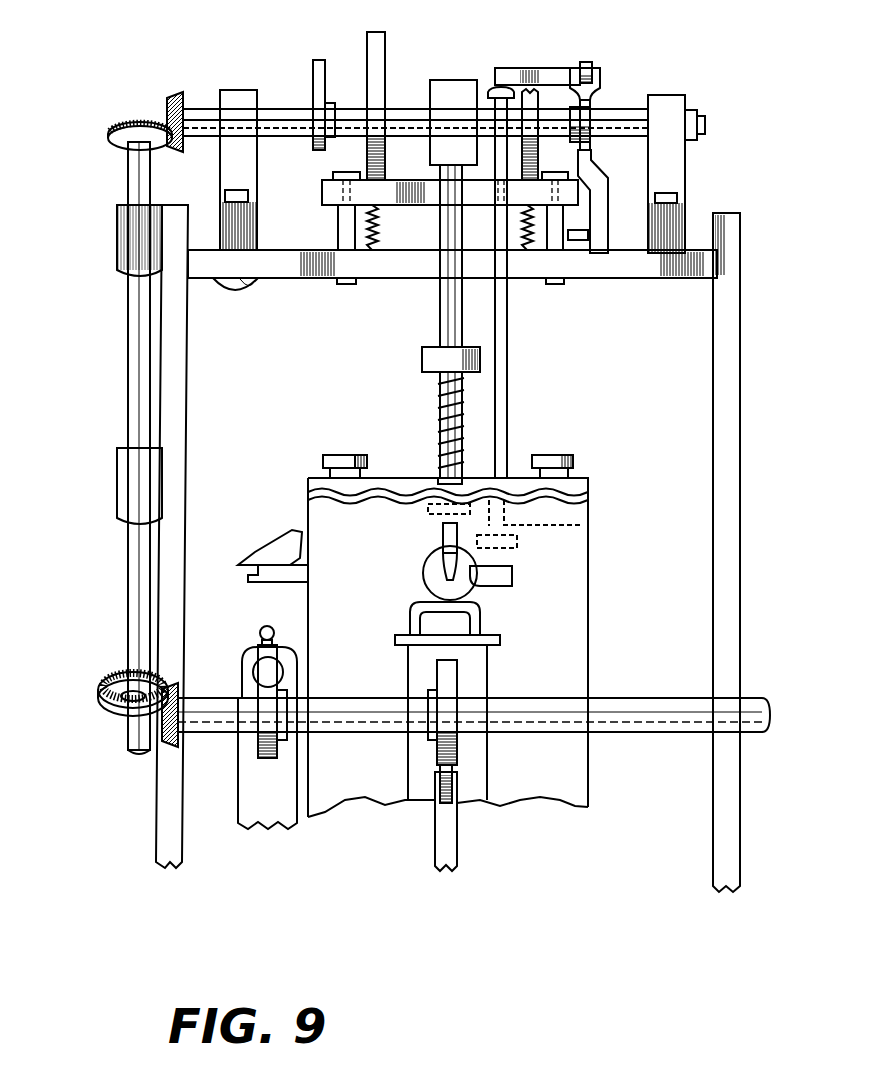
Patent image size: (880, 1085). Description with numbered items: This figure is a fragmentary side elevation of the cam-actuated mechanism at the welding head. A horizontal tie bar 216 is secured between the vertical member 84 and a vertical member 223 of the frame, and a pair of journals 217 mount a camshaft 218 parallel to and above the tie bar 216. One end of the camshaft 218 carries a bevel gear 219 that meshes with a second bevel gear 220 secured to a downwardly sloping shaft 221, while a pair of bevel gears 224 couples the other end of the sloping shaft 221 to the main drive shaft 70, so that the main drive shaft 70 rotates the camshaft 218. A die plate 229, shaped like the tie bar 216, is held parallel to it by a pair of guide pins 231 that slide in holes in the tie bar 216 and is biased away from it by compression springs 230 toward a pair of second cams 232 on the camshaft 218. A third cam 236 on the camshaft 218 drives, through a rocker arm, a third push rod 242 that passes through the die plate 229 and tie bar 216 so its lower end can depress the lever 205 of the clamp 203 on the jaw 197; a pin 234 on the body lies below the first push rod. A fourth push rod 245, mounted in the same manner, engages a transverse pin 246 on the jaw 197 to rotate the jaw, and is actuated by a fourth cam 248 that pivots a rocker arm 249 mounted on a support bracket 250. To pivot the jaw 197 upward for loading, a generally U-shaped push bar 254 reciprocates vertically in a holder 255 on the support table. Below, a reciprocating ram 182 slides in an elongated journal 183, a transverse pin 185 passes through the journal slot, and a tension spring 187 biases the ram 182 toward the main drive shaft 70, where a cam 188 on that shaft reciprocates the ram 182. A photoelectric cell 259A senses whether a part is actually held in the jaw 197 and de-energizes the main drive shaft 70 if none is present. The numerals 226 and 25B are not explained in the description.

The camshaft 218 is at (628, 108).
The journals 217 is at (240, 90).
The bevel gear 219 is at (175, 93).
The second bevel gear 220 is at (110, 125).
The downwardly sloping shaft 221 is at (128, 183).
The vertical member 223 is at (175, 395).
The horizontal tie bar 216 is at (665, 270).
The vertical member 84 is at (738, 608).
The die plate 229 is at (420, 205).
The guide pins 231 is at (340, 216).
The compression springs 230 is at (375, 240).
The third cam 236 is at (318, 60).
The second cams 232 is at (378, 35).
The block and screw shaft 226 is at (452, 80).
The rocker arm 249 is at (495, 68).
The fourth cam 248 is at (592, 97).
The support bracket 250 is at (606, 160).
The photoelectric cell 259A is at (238, 285).
The third push rod 242 is at (438, 475).
The pin 234 is at (560, 455).
The fourth push rod 245 is at (583, 525).
The lever 205 is at (280, 548).
The jaw 197 is at (412, 583).
The transverse pin 246 is at (490, 586).
The U-shaped push bar 254 is at (480, 612).
The holder 255 is at (487, 780).
The gear 25B is at (457, 685).
The clamp 203 is at (246, 586).
The tension spring 187 is at (268, 628).
The transverse pin 185 is at (277, 645).
The cam 188 is at (258, 745).
The reciprocating ram 182 is at (245, 665).
The elongated journal 183 is at (272, 830).
The main drive shaft 70 is at (205, 715).
The bevel gears 224 is at (168, 743).